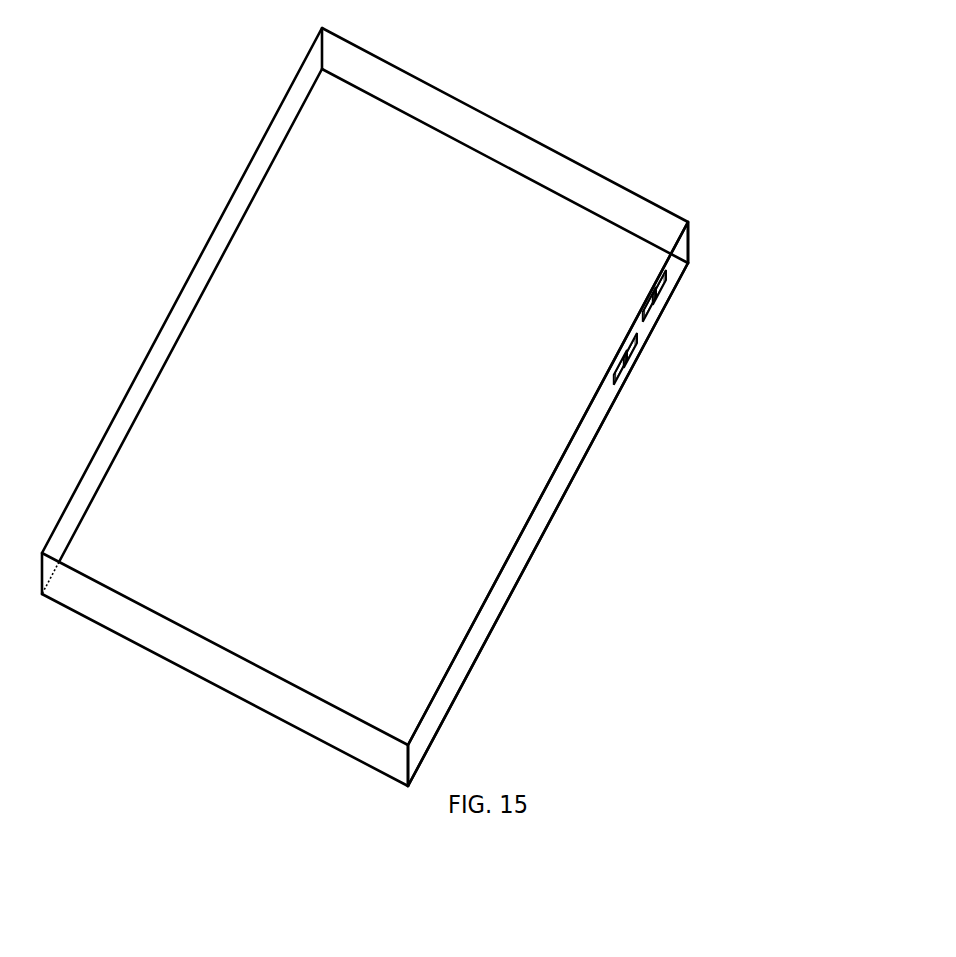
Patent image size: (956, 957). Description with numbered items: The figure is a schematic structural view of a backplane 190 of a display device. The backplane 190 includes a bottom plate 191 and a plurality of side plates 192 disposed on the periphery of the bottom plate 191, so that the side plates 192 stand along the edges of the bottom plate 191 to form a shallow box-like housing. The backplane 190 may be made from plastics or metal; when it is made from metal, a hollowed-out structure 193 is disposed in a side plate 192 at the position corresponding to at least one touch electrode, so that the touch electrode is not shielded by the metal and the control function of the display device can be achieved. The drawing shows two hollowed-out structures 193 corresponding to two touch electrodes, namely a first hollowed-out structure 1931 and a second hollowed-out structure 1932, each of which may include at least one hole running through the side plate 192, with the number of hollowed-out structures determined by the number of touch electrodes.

The backplane 190 is at (425, 407).
The bottom plate 191 is at (381, 386).
The side plates 192 is at (551, 504).
The hollowed-out structure 193 is at (735, 317).
The first hollowed-out structure 1931 is at (717, 288).
The second hollowed-out structure 1932 is at (703, 340).